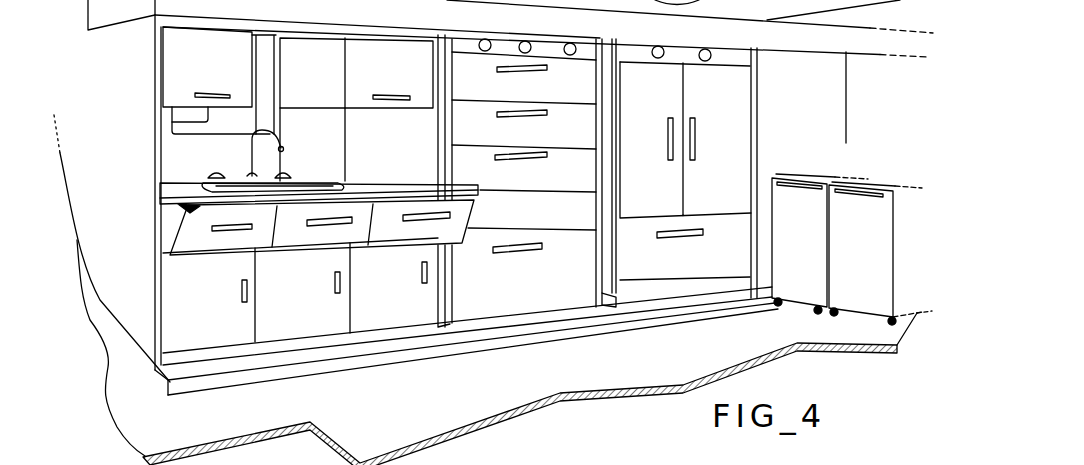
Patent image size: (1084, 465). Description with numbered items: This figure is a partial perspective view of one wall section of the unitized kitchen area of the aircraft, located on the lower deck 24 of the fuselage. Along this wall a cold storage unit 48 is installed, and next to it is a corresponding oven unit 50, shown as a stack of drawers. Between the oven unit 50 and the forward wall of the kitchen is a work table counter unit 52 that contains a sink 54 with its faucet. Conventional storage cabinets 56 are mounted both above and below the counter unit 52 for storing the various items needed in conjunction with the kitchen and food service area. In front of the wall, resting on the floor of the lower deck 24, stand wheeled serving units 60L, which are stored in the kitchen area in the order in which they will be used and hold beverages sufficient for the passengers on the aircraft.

The lower deck 24 is at (468, 391).
The cold storage unit 48 is at (635, 120).
The oven unit 50 is at (506, 137).
The work table counter unit 52 is at (383, 185).
The sink 54 is at (296, 191).
The storage cabinets 56 is at (194, 69).
The wheeled serving units 60L is at (818, 253).